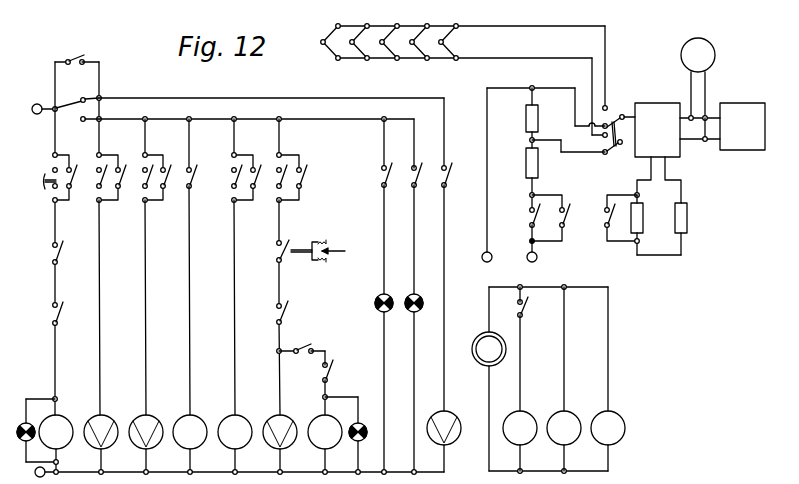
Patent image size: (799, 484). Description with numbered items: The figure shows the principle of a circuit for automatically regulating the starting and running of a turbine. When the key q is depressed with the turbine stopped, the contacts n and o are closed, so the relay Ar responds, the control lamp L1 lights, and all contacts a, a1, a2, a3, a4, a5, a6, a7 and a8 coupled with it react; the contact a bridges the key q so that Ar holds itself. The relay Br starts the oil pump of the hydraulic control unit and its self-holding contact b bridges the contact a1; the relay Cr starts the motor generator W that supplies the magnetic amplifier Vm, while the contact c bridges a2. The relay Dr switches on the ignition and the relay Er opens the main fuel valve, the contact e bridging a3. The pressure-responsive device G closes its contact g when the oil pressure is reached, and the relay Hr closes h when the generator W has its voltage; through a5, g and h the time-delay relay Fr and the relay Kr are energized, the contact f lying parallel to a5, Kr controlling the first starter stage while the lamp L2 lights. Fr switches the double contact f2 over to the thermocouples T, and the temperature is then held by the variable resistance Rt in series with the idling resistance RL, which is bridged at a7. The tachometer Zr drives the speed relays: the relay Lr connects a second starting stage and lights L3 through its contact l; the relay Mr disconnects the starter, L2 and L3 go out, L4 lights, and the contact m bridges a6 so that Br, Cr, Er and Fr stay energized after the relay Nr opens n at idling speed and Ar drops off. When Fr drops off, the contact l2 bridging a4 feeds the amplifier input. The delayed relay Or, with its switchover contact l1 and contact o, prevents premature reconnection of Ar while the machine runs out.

The contact m is at (298, 209).
The contact a6 is at (77, 119).
The key q is at (42, 181).
The contact a is at (136, 179).
The contact a1 is at (108, 181).
The self-holding contact b is at (125, 179).
The contact a2 is at (154, 181).
The self-holding contact c is at (169, 179).
The contact a3 is at (243, 181).
The contact e is at (260, 179).
The contact a5 is at (288, 181).
The contact f is at (305, 179).
The contact n is at (62, 253).
The contact o is at (62, 314).
The contact g is at (274, 250).
The pressure-responsive device G is at (318, 245).
The contact h is at (285, 313).
The contact a8 is at (302, 339).
The contact l is at (388, 175).
The contact l1 is at (452, 177).
The contact l2 is at (555, 218).
The control lamp L1 is at (29, 429).
The control lamp L2 is at (362, 419).
The control lamp L3 is at (387, 294).
The control lamp L4 is at (418, 294).
The relay Ar is at (56, 432).
The relay Br is at (101, 432).
The relay Cr is at (146, 432).
The relay Dr is at (190, 432).
The relay Er is at (235, 432).
The time-delay relay Fr is at (280, 432).
The relay Kr is at (325, 432).
The relay Or is at (444, 428).
The thermocouples T is at (463, 31).
The double contact f2 is at (619, 122).
The relay Hr is at (698, 78).
The magnetic amplifier Vm is at (657, 130).
The alternating current generator W is at (742, 126).
The contact a4 is at (541, 220).
The contact a7 is at (621, 218).
The idling resistance RL is at (646, 225).
The variable resistance Rt is at (690, 229).
The electric tachometer Zr is at (489, 349).
The relay Lr is at (520, 428).
The relay Mr is at (564, 428).
The relay Nr is at (608, 428).